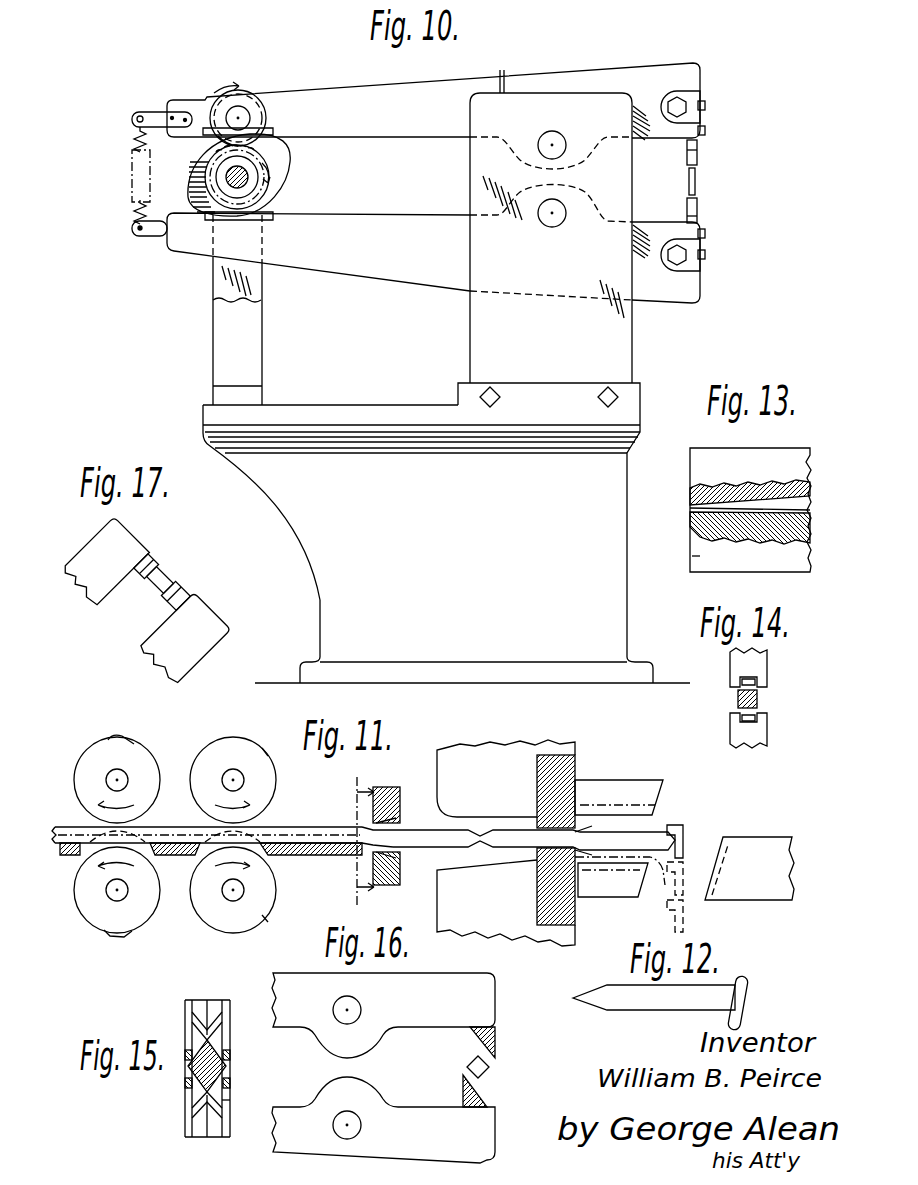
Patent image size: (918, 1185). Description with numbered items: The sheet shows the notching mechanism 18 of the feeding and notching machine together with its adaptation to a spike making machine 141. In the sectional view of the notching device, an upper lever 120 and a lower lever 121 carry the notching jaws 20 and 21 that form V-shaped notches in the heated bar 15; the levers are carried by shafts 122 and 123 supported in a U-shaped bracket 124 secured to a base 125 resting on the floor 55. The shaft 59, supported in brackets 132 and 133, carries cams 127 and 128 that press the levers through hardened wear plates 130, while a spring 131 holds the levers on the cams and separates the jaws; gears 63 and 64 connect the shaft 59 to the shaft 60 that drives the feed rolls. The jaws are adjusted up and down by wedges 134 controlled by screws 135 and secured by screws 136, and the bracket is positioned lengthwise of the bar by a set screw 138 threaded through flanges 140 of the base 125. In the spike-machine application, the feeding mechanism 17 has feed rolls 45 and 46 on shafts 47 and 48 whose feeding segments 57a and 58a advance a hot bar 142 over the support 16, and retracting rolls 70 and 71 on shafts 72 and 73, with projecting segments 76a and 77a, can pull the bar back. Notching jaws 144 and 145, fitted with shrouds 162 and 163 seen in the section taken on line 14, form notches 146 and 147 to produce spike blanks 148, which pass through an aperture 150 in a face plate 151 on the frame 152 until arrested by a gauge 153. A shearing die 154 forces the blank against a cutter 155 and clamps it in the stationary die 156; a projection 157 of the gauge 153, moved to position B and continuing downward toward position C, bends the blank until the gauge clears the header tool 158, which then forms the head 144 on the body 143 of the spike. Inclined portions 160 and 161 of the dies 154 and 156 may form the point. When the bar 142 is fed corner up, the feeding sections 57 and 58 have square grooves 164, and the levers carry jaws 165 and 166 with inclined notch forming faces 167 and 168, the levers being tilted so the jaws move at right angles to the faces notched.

In FIG. 10, the bar 15 is at (688, 182).
In FIG. 11, the feeding mechanism 17 is at (165, 723).
In FIG. 11, the bar notching mechanism 18 is at (407, 766).
In FIG. 10, the upper notching jaw 20 is at (705, 132).
In FIG. 10, the lower notching jaw 21 is at (705, 226).
In FIG. 11, the section line 14 is at (355, 840).
In FIG. 11, the support 16 is at (304, 856).
In FIG. 11, the feed roll 45 is at (218, 752).
In FIG. 15, the feed roll 45 is at (185, 1012).
In FIG. 11, the feed roll 46 is at (210, 913).
In FIG. 11, the feed roll shaft 47 is at (239, 768).
In FIG. 11, the feed roll shaft 48 is at (241, 893).
In FIG. 10, the floor 55 is at (292, 681).
In FIG. 15, the bar-engaging segment 57 is at (230, 1015).
In FIG. 15, the bar-engaging segment 58 is at (230, 1108).
In FIG. 11, the feeding segment 57a is at (278, 787).
In FIG. 11, the feeding segment 58a is at (270, 850).
In FIG. 10, the shaft 59 is at (229, 176).
In FIG. 10, the shaft 60 is at (241, 112).
In FIG. 10, the gear 63 is at (262, 172).
In FIG. 10, the gear 64 is at (222, 138).
In FIG. 11, the retracting roll 70 is at (93, 752).
In FIG. 11, the retracting roll 71 is at (96, 914).
In FIG. 11, the retracting roll shaft 72 is at (126, 772).
In FIG. 11, the retracting roll shaft 73 is at (122, 892).
In FIG. 11, the peripheral projecting segment 76a is at (116, 740).
In FIG. 11, the peripheral projecting segment 77a is at (126, 937).
In FIG. 10, the upper lever 120 is at (527, 76).
In FIG. 17, the upper lever 120 is at (104, 561).
In FIG. 16, the upper lever 120 is at (383, 1015).
In FIG. 10, the lower lever 121 is at (398, 278).
In FIG. 17, the lower lever 121 is at (193, 631).
In FIG. 16, the lower lever 121 is at (383, 1120).
In FIG. 10, the lever shaft 122 is at (546, 139).
In FIG. 10, the lever shaft 123 is at (558, 224).
In FIG. 10, the U-shaped bracket 124 is at (625, 346).
In FIG. 10, the base 125 is at (353, 412).
In FIG. 10, the cam 127 is at (190, 186).
In FIG. 10, the cam 128 is at (276, 158).
In FIG. 10, the wear plate 130 is at (263, 128).
In FIG. 10, the spring 131 is at (133, 120).
In FIG. 10, the bracket 132 is at (216, 344).
In FIG. 10, the bracket 133 is at (220, 284).
In FIG. 10, the wedge 134 is at (688, 100).
In FIG. 10, the screw 135 is at (668, 100).
In FIG. 10, the screw 136 is at (706, 130).
In FIG. 10, the set screw 138 is at (498, 404).
In FIG. 10, the flange 140 is at (552, 388).
In FIG. 11, the spike making machine 141 is at (596, 762).
In FIG. 17, the bar 142 is at (143, 601).
In FIG. 11, the bar 142 is at (178, 834).
In FIG. 16, the bar 142 is at (467, 1067).
In FIG. 15, the bar 142 is at (226, 1066).
In FIG. 12, the bar 142 is at (607, 978).
In FIG. 12, the spike body 143 is at (653, 1000).
In FIG. 17, the notching jaw 144 is at (133, 543).
In FIG. 14, the notching jaw 144 is at (762, 660).
In FIG. 11, the notching jaw 144 is at (398, 802).
In FIG. 12, the notching jaw 144 is at (747, 1008).
In FIG. 17, the notching jaw 145 is at (199, 583).
In FIG. 14, the notching jaw 145 is at (762, 738).
In FIG. 11, the notching jaw 145 is at (399, 878).
In FIG. 11, the notch 146 is at (374, 828).
In FIG. 11, the notch 147 is at (371, 852).
In FIG. 14, the spike blank 148 is at (760, 700).
In FIG. 11, the spike blank 148 is at (448, 834).
In FIG. 11, the aperture 150 is at (540, 810).
In FIG. 11, the face plate 151 is at (578, 773).
In FIG. 11, the frame 152 is at (484, 926).
In FIG. 11, the gauge 153 is at (683, 841).
In FIG. 13, the shearing die 154 is at (743, 456).
In FIG. 11, the shearing die 154 is at (636, 790).
In FIG. 11, the cutter 155 is at (585, 865).
In FIG. 13, the stationary die 156 is at (702, 557).
In FIG. 11, the stationary die 156 is at (581, 893).
In FIG. 11, the projection 157 is at (676, 830).
In FIG. 11, the header tool 158 is at (749, 868).
In FIG. 13, the inclined portion 160 is at (690, 504).
In FIG. 13, the inclined portion 161 is at (690, 512).
In FIG. 14, the shroud 162 is at (738, 681).
In FIG. 11, the shroud 162 is at (398, 822).
In FIG. 14, the shroud 163 is at (748, 724).
In FIG. 11, the shroud 163 is at (398, 855).
In FIG. 15, the square groove 164 is at (188, 1082).
In FIG. 16, the notching jaw 165 is at (490, 1046).
In FIG. 16, the notching jaw 166 is at (480, 1093).
In FIG. 16, the inclined notch forming face 167 is at (472, 1040).
In FIG. 16, the inclined notch forming face 168 is at (465, 1094).
In FIG. 11, the gauge position B is at (680, 880).
In FIG. 11, the stop position C is at (681, 920).